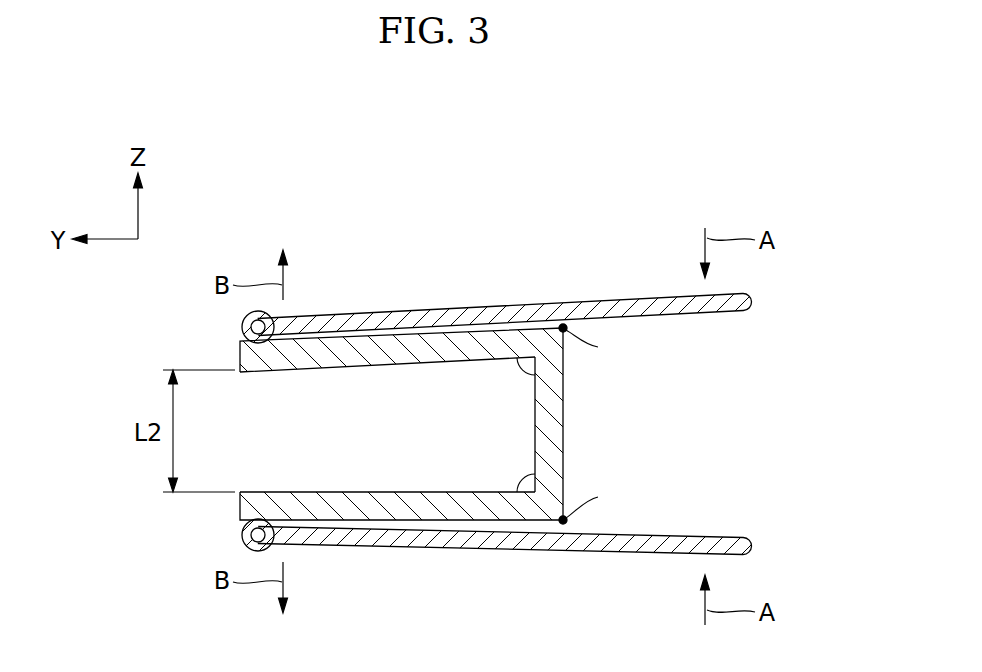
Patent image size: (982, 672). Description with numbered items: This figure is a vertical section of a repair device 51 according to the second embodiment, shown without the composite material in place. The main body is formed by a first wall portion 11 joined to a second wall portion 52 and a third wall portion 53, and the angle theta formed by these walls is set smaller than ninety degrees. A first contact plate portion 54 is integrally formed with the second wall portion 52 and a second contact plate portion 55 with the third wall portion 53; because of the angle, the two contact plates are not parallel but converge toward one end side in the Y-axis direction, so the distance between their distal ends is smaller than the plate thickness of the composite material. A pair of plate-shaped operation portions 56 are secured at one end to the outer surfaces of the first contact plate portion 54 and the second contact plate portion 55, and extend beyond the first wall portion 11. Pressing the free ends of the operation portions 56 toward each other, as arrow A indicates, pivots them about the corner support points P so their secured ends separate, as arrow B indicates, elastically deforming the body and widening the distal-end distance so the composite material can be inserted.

The repair device 51 is at (593, 222).
The second wall portion 52 is at (391, 383).
The third wall portion 53 is at (391, 486).
The first contact plate portion 54 is at (413, 345).
The second contact plate portion 55 is at (420, 547).
The operation portions 56 is at (648, 292).
The first wall portion 11 is at (556, 412).